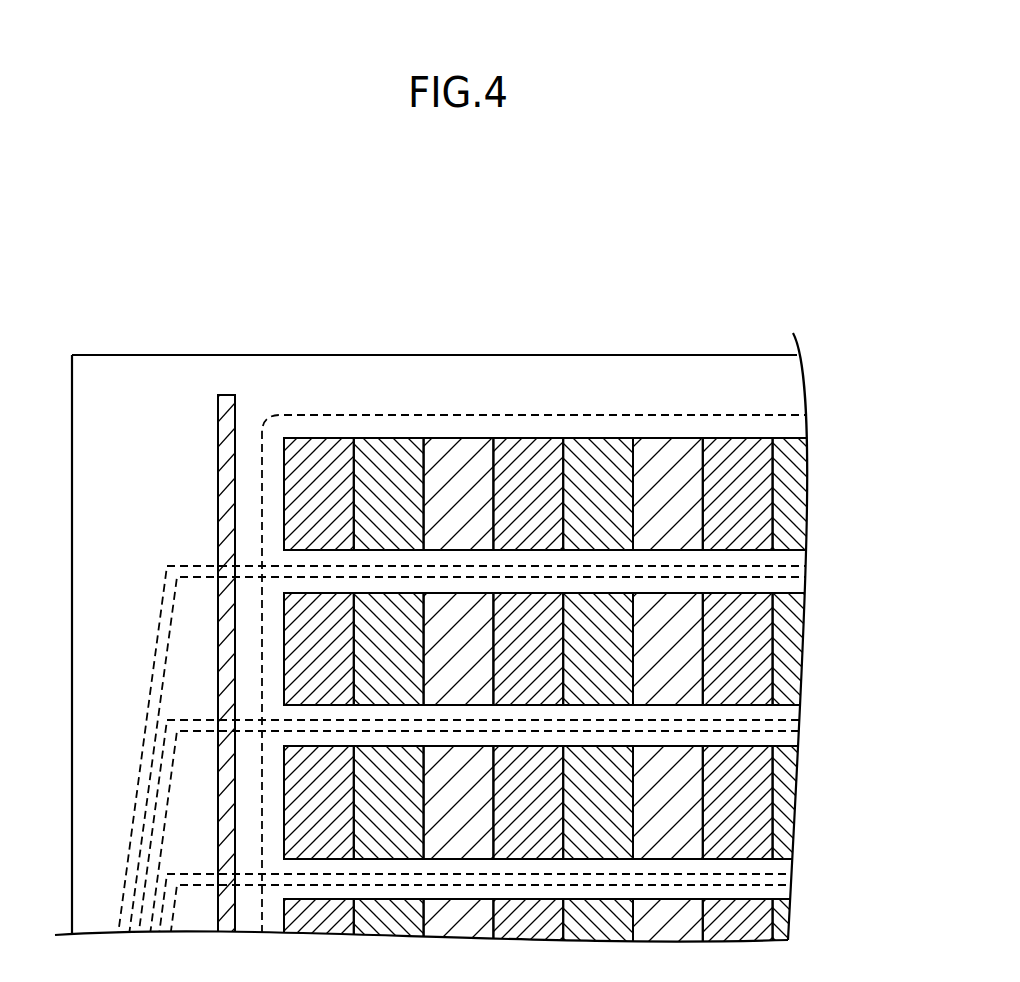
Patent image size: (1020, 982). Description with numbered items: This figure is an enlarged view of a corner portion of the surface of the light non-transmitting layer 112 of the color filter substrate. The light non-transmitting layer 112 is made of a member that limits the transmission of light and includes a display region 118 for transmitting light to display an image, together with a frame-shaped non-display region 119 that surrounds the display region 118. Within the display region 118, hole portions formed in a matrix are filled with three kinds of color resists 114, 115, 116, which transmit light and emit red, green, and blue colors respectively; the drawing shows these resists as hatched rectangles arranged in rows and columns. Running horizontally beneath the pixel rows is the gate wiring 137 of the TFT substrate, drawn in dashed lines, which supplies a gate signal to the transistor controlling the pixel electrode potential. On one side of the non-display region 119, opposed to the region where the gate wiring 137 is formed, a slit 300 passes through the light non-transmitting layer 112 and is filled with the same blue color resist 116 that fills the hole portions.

The light non-transmitting layer 112 is at (670, 353).
The color resist 114 is at (327, 453).
The color resist 115 is at (395, 455).
The color resist 116 is at (460, 457).
The display region 118 is at (813, 425).
The non-display region 119 is at (810, 383).
The gate wiring 137 is at (158, 628).
The slit 300 is at (237, 402).